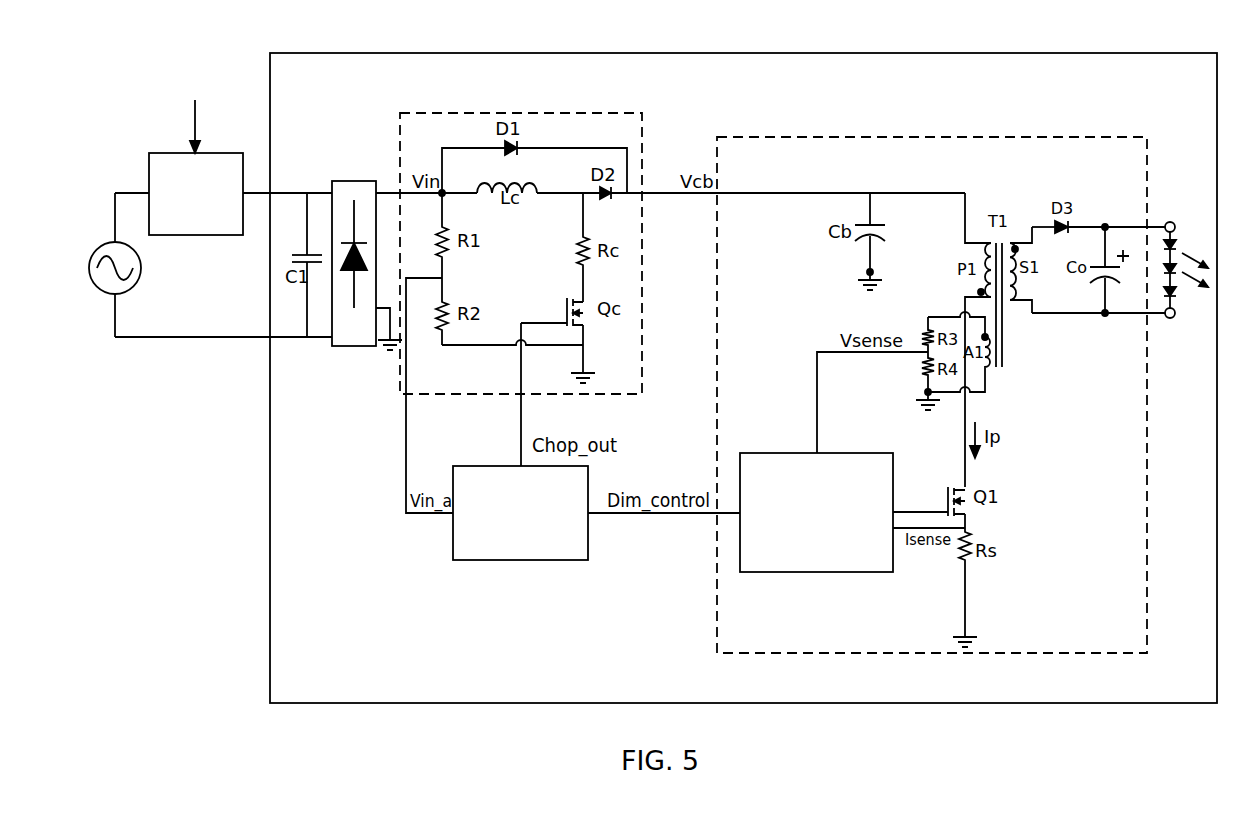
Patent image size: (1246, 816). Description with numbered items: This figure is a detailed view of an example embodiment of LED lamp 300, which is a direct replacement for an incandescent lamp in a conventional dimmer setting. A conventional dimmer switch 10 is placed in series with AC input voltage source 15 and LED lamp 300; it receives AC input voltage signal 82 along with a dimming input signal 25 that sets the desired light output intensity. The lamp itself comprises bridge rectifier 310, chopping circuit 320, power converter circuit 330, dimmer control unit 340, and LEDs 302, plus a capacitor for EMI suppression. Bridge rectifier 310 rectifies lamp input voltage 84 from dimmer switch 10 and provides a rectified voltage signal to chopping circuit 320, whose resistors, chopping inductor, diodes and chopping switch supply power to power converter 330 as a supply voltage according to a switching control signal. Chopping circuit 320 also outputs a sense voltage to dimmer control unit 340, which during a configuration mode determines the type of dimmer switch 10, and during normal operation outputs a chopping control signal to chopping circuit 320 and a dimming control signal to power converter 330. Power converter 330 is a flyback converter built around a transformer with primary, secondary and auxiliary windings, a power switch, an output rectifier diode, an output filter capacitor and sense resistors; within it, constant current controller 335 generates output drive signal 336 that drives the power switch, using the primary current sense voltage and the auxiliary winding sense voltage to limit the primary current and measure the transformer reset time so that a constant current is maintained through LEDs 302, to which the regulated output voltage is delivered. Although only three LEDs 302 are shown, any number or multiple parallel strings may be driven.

The LED lamp 300 is at (997, 53).
The dimmer switch 10 is at (217, 153).
The dimming input signal 25 is at (195, 114).
The AC input voltage source 15 is at (140, 272).
The AC input voltage signal 82 is at (147, 191).
The lamp input voltage 84 is at (277, 193).
The bridge rectifier 310 is at (355, 181).
The chopping circuit 320 is at (557, 113).
The power converter circuit 330 is at (847, 137).
The constant current controller 335 is at (843, 453).
The output drive signal 336 is at (907, 512).
The dimmer control unit 340 is at (512, 560).
The LEDs 302 is at (1188, 258).